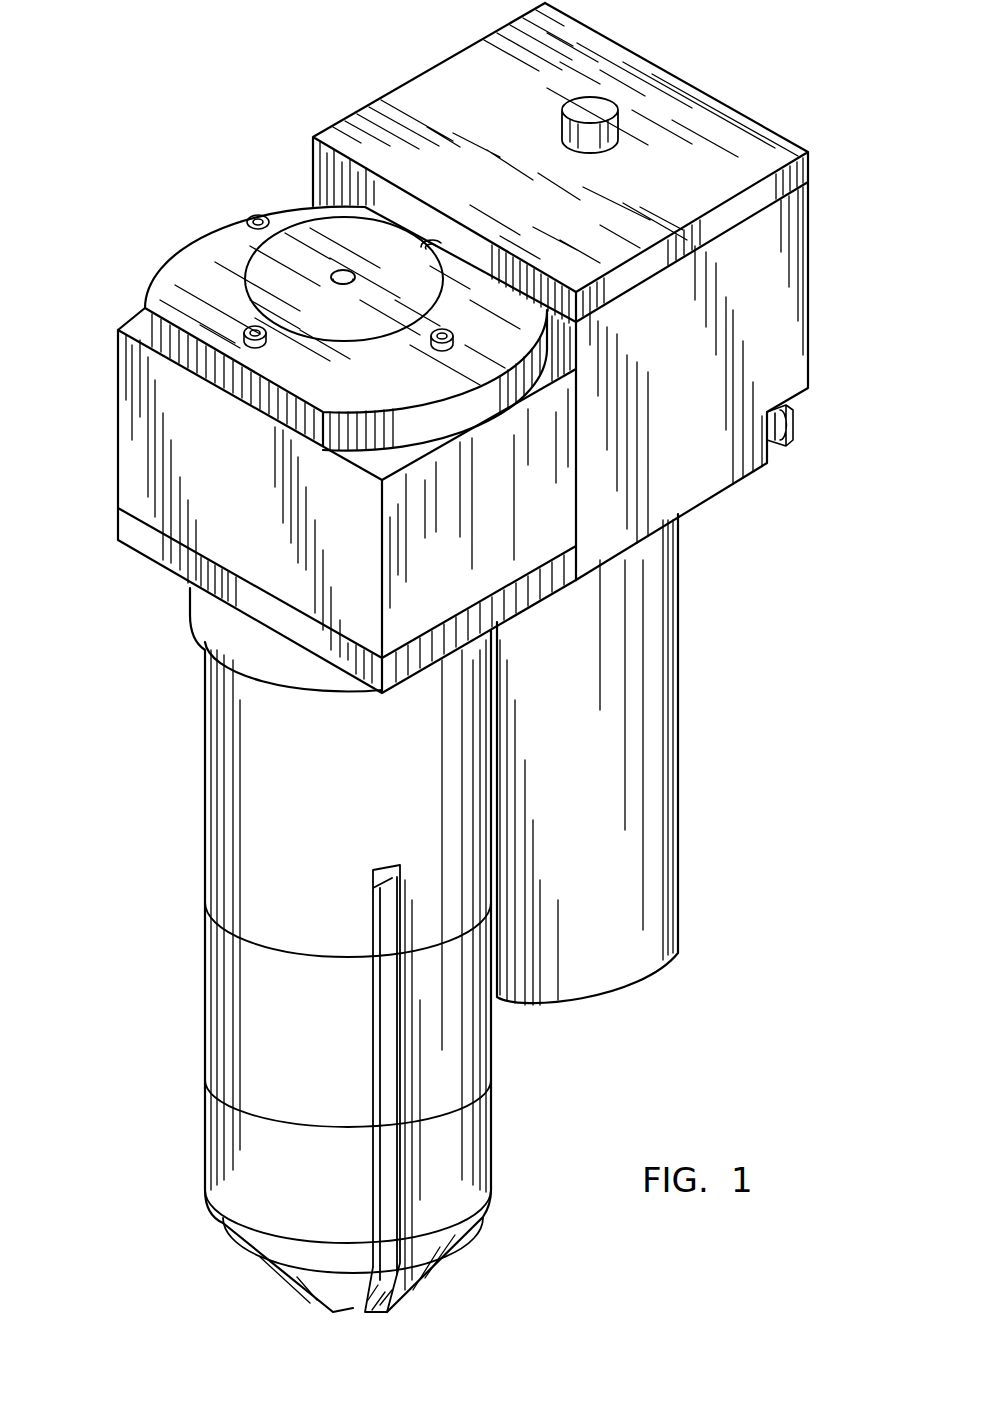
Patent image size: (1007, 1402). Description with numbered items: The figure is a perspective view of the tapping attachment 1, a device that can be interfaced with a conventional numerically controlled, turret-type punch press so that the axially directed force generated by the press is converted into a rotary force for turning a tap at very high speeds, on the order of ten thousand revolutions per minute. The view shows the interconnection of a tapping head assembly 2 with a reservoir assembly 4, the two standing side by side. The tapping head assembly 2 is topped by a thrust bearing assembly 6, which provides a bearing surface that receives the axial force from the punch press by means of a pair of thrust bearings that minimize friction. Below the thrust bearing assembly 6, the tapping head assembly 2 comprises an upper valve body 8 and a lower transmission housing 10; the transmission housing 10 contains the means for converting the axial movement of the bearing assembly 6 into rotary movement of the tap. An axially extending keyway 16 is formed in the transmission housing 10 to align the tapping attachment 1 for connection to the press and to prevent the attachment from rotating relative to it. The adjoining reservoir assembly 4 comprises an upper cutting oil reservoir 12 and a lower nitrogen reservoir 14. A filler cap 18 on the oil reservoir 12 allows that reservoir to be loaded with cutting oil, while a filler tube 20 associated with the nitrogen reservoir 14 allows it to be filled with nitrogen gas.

The tapping attachment 1 is at (697, 51).
The tapping head assembly 2 is at (176, 673).
The reservoir assembly 4 is at (717, 595).
The thrust bearing assembly 6 is at (247, 263).
The upper valve body 8 is at (119, 484).
The lower transmission housing 10 is at (222, 876).
The upper cutting oil reservoir 12 is at (800, 318).
The lower nitrogen reservoir 14 is at (663, 795).
The axially extending keyway 16 is at (373, 926).
The filler cap 18 is at (562, 112).
The filler tube 20 is at (793, 424).